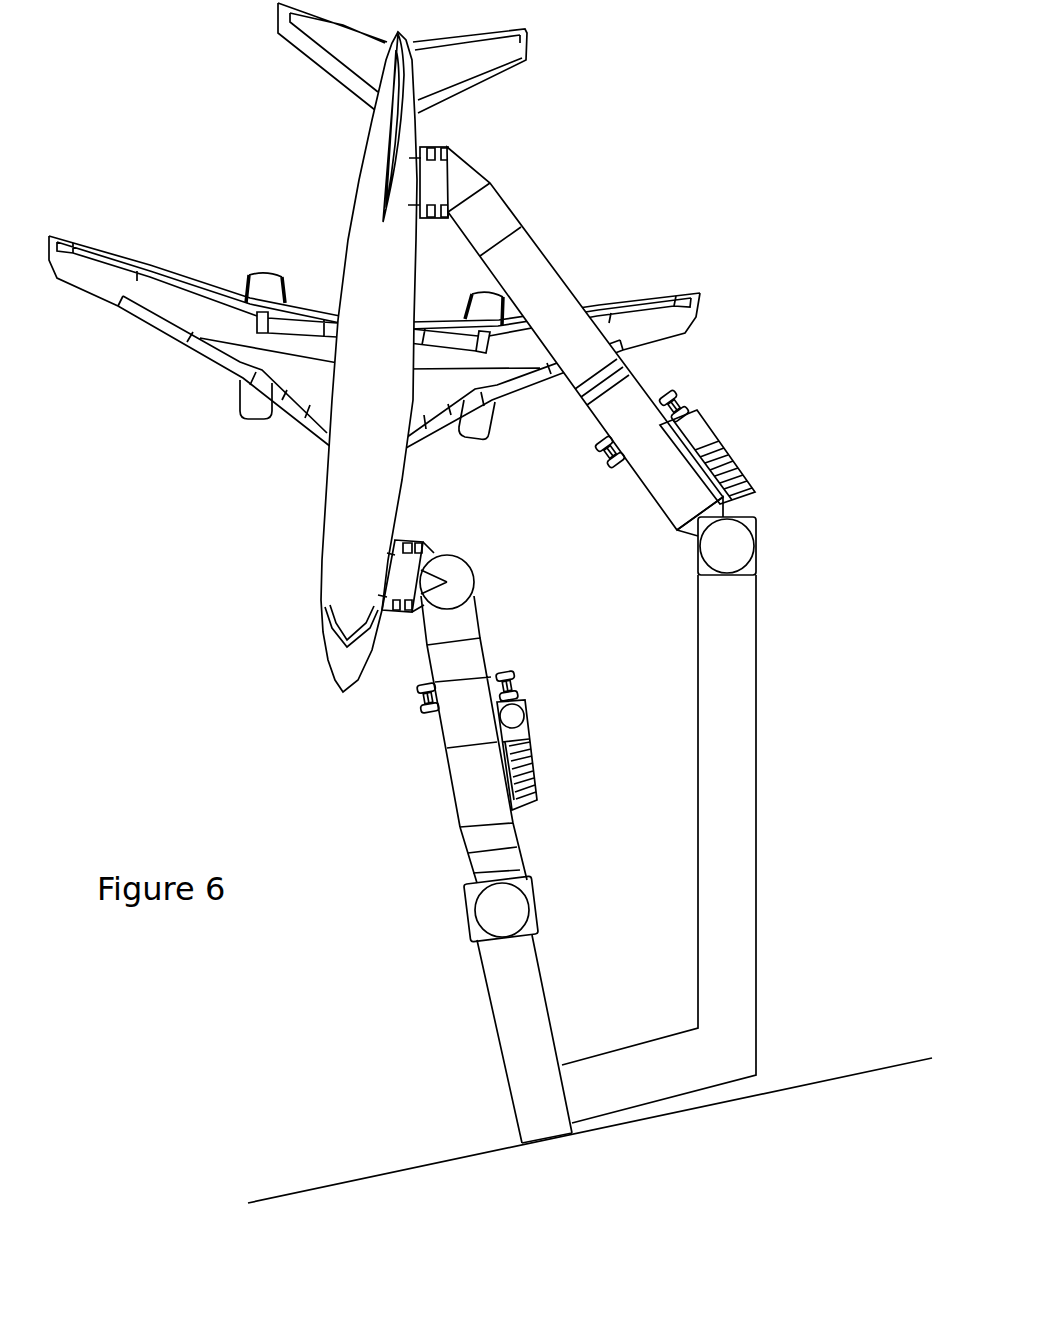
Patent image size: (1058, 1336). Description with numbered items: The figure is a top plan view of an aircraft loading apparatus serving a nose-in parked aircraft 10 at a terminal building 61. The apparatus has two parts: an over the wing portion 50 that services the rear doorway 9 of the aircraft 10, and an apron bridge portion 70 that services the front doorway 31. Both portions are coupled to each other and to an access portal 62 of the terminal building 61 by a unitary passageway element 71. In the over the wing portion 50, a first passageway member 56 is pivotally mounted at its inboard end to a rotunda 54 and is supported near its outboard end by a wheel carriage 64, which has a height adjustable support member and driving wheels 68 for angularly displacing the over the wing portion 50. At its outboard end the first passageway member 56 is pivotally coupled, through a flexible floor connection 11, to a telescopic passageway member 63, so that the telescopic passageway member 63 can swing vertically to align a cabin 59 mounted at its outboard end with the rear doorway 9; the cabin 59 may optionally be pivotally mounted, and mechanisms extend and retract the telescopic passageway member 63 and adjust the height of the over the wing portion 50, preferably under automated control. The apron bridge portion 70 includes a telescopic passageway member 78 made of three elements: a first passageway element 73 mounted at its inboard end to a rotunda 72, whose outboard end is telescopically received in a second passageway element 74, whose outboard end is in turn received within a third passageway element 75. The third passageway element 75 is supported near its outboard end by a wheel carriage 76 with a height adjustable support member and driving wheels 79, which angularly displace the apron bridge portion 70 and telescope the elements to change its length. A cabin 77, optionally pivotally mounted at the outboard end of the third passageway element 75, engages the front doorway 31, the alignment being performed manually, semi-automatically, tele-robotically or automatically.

The rear doorway 9 is at (418, 178).
The nose-in parked aircraft 10 is at (388, 388).
The flexible floor connection 11 is at (640, 371).
The front doorway 31 is at (392, 570).
The over the wing portion 50 is at (568, 174).
The rotunda 54 is at (733, 556).
The first passageway member 56 is at (652, 493).
The cabin 59 is at (446, 150).
The terminal building 61 is at (816, 1161).
The access portal 62 is at (540, 1143).
The telescopic passageway member 63 is at (543, 243).
The wheel carriage 64 is at (678, 393).
The driving wheels 68 is at (601, 461).
The apron bridge portion 70 is at (395, 832).
The unitary passageway element 71 is at (508, 1087).
The rotunda 72 is at (493, 925).
The first passageway element 73 is at (503, 857).
The second passageway element 74 is at (502, 835).
The third passageway element 75 is at (498, 802).
The wheel carriage 76 is at (418, 704).
The cabin 77 is at (415, 540).
The telescopic passageway member 78 is at (458, 826).
The driving wheels 79 is at (505, 672).